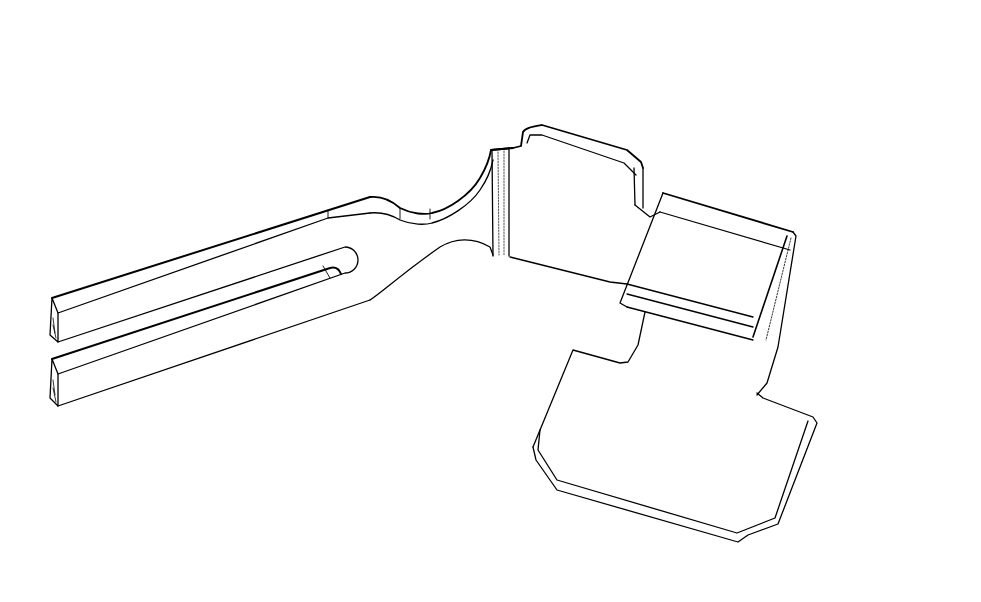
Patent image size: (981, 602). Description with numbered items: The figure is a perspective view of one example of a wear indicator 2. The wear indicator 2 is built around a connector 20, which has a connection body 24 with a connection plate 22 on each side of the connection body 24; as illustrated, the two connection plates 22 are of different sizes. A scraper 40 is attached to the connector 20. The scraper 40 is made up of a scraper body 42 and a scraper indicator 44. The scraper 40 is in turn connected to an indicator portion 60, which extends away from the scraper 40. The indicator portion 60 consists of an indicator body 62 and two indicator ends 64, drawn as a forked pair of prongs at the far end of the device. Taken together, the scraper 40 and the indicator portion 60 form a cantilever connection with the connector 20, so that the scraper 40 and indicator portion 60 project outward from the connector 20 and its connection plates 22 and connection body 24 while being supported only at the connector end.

The wear indicator 2 is at (141, 79).
The connector 20 is at (650, 193).
The connection plate 22 is at (753, 423).
The connection body 24 is at (787, 268).
The scraper 40 is at (650, 193).
The scraper body 42 is at (560, 217).
The scraper indicator 44 is at (558, 142).
The indicator portion 60 is at (500, 147).
The indicator body 62 is at (432, 217).
The indicator ends 64 is at (160, 290).